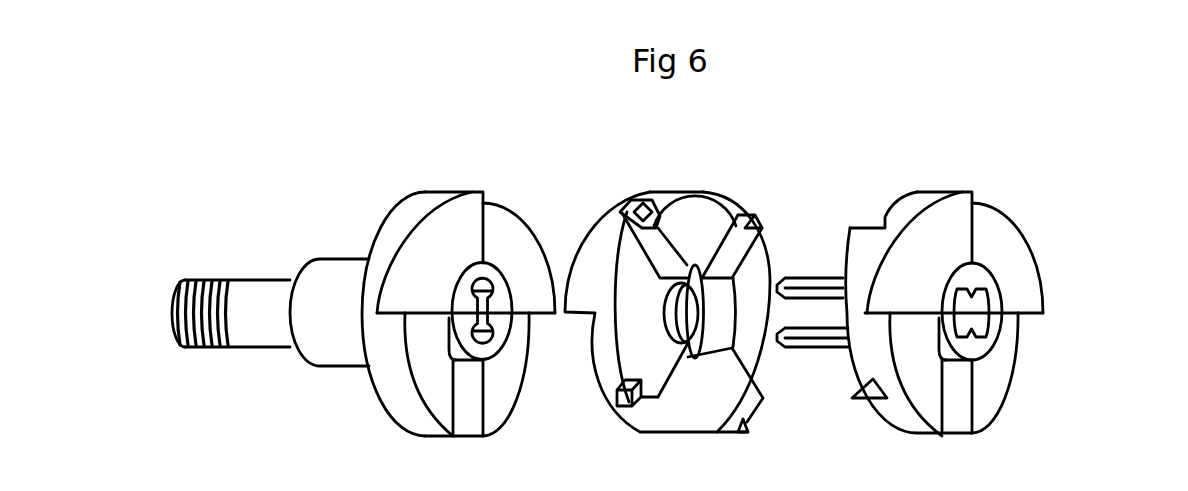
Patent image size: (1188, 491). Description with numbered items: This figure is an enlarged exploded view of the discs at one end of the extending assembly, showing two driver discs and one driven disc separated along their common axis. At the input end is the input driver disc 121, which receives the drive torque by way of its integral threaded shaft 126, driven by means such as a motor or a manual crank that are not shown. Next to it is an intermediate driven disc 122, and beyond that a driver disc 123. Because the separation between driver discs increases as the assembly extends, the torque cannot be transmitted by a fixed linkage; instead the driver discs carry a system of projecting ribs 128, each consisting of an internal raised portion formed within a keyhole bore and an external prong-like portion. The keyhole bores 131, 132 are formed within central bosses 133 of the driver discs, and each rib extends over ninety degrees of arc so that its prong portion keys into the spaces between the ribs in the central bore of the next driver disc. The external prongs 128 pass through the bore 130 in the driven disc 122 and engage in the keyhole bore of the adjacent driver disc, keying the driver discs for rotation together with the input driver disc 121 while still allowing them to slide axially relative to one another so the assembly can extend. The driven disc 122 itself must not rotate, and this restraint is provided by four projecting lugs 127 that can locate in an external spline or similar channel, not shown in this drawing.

The input driver disc 121 is at (452, 313).
The intermediate driven disc 122 is at (683, 313).
The driver disc 123 is at (997, 287).
The threaded shaft 126 is at (267, 278).
The projecting lug 127 is at (630, 405).
The projecting rib 128 is at (832, 276).
The bore 130 is at (710, 347).
The keyhole bore 131 is at (490, 302).
The keyhole bore 132 is at (983, 315).
The central boss 133 is at (487, 362).